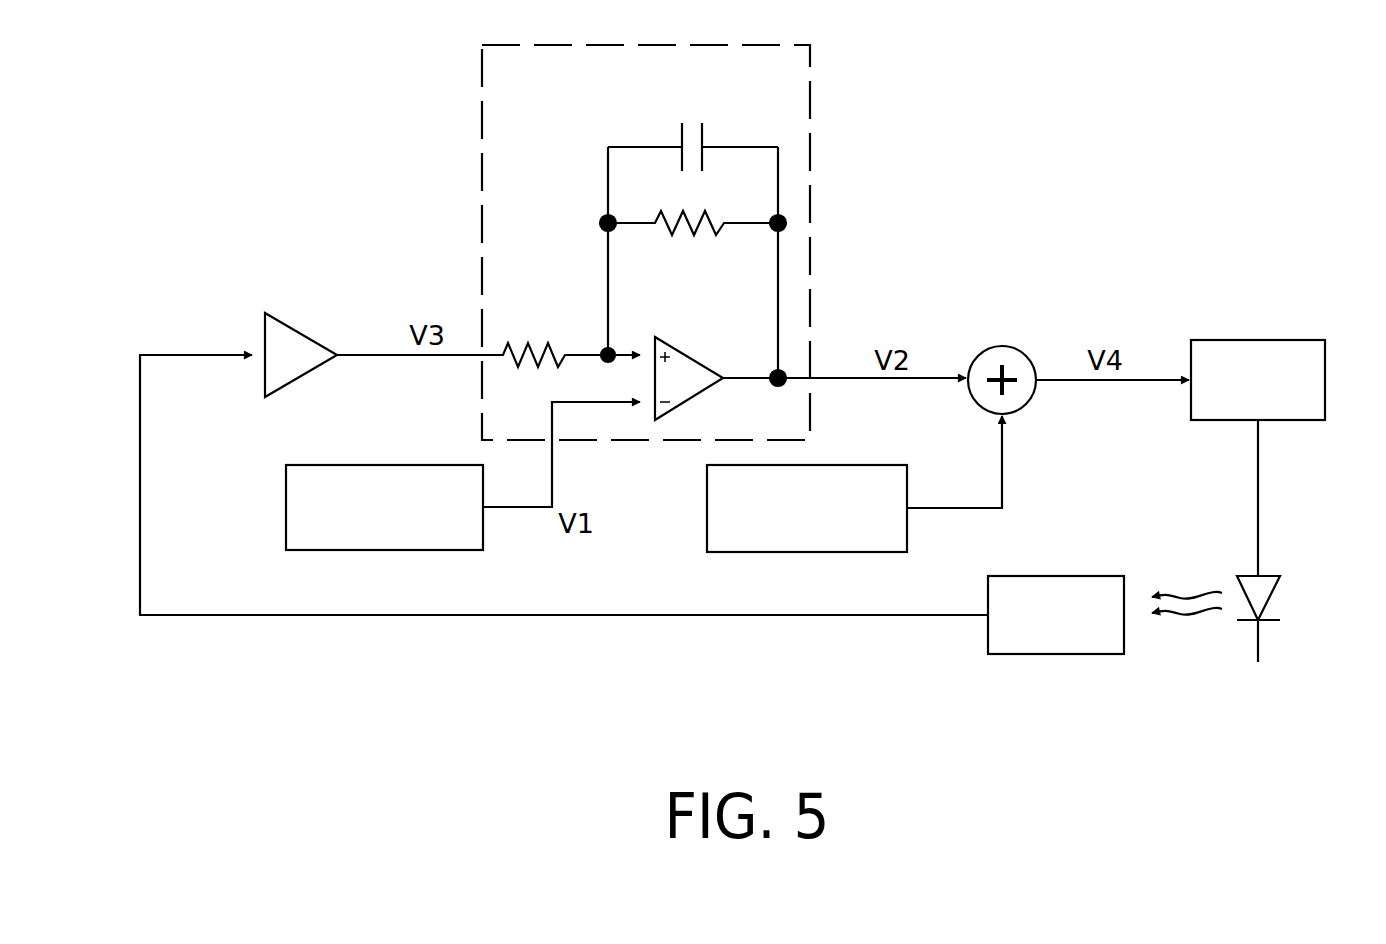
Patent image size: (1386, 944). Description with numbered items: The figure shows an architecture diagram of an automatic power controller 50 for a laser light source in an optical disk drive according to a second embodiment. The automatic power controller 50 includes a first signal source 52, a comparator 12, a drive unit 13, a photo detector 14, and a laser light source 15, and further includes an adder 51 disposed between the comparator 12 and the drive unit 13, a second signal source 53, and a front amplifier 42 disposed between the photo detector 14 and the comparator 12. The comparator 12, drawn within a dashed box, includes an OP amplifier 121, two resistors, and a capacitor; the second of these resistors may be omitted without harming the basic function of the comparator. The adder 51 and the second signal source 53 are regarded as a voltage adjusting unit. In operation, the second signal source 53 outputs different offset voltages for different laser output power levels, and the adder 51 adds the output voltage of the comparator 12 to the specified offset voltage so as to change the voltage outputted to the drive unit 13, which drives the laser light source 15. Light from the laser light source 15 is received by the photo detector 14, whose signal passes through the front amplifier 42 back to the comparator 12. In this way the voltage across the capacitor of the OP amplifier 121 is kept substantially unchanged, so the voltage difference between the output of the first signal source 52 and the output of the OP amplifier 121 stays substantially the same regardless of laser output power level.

The automatic power controller 50 is at (298, 104).
The comparator 12 is at (711, 242).
The OP amplifier 121 is at (698, 372).
The front amplifier 42 is at (287, 342).
The adder 51 is at (1002, 347).
The drive unit 13 is at (1255, 345).
The laser light source 15 is at (1285, 600).
The photo detector 14 is at (1066, 642).
The first signal source 52 is at (383, 545).
The second signal source 53 is at (812, 548).